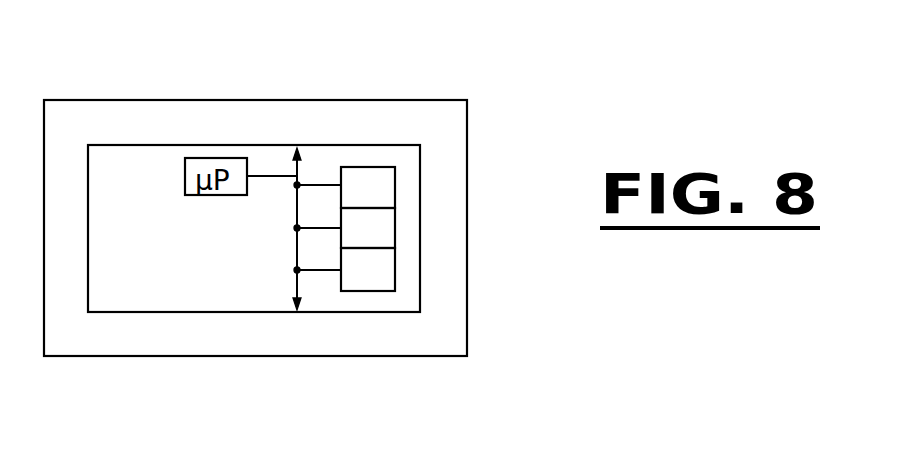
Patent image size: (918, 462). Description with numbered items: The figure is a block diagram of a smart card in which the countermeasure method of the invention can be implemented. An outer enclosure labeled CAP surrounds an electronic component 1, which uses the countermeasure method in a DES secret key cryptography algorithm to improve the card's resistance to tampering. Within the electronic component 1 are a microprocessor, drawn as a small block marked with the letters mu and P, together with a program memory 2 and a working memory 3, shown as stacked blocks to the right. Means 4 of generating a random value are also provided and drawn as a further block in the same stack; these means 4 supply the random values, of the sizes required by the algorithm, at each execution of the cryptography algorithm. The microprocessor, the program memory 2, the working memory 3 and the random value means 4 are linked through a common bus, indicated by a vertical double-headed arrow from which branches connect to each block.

The cap / housing CAP is at (298, 100).
The electronic component 1 is at (418, 147).
The program memory 2 is at (387, 193).
The working memory 3 is at (387, 233).
The means of generating a random value 4 is at (383, 276).